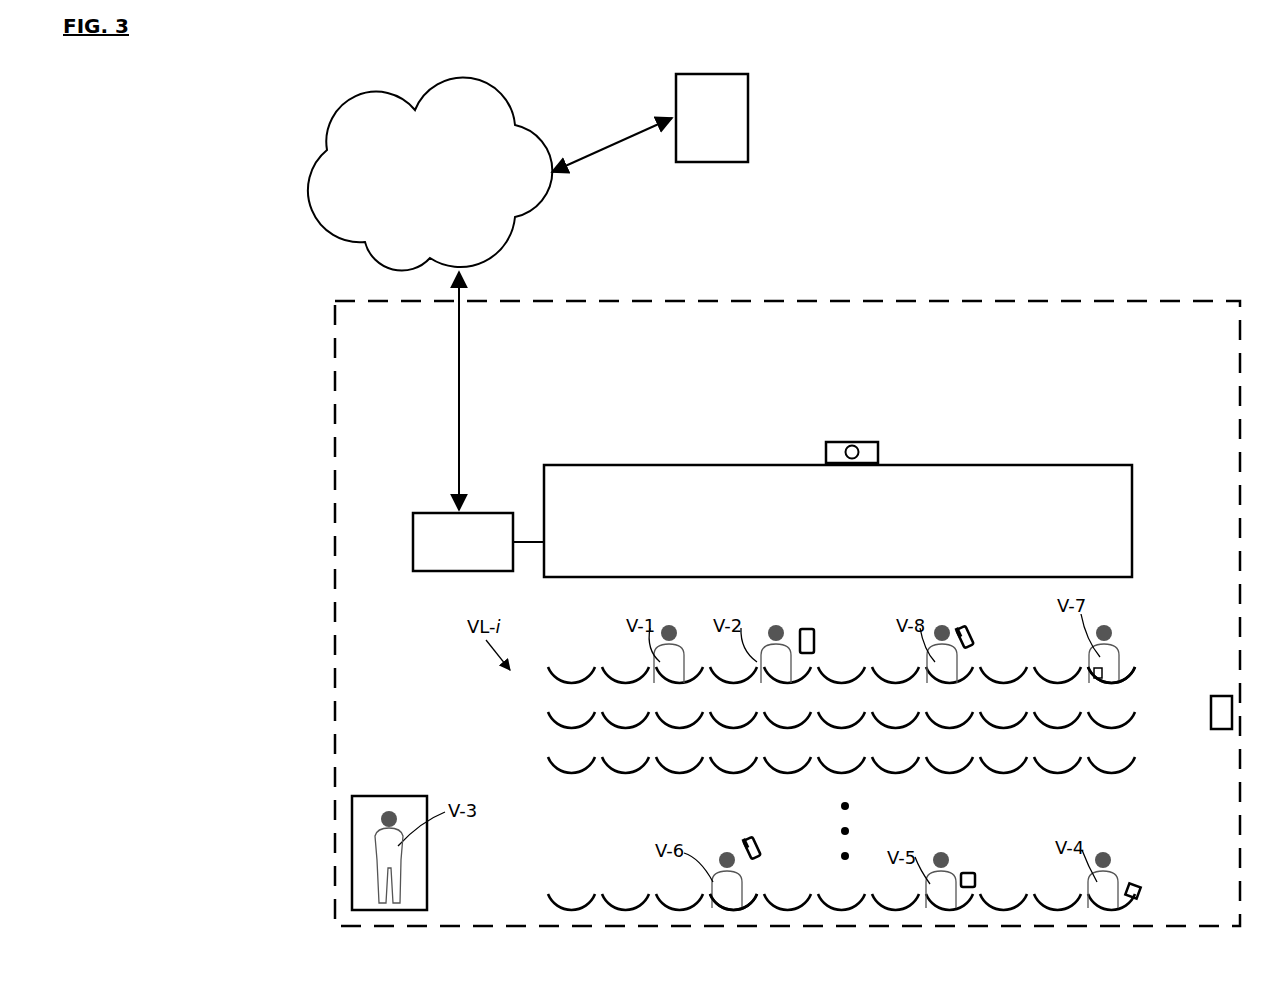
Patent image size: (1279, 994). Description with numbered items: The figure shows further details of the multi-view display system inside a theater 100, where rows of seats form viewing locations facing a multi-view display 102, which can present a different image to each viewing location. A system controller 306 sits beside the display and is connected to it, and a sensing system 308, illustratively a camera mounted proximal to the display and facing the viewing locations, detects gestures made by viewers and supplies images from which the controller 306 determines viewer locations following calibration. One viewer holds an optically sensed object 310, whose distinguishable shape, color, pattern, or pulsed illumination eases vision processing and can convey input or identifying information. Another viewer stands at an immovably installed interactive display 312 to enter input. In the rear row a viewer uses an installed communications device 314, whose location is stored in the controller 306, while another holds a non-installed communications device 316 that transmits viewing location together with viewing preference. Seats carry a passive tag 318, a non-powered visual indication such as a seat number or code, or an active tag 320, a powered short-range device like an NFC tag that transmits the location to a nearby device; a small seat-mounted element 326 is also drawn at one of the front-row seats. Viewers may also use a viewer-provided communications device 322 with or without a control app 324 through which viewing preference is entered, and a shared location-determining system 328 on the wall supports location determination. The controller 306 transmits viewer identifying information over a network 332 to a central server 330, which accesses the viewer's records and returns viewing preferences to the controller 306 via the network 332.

The theater 100 is at (787, 603).
The multi-view display 102 is at (838, 521).
The system controller 306 is at (433, 512).
The sensing system 308 is at (878, 446).
The optically sensed object 310 is at (813, 629).
The interactive display 312 is at (398, 796).
The installed communications device 314 is at (1138, 886).
The non-installed communications device 316 is at (968, 872).
The passive tag 318 is at (756, 891).
The active tag 320 is at (1137, 668).
The viewer-provided communications device 322 is at (973, 641).
The control app 324 is at (970, 627).
The seat sensor 326 is at (1101, 668).
The shared location-determining system 328 is at (1222, 730).
The central server 330 is at (749, 115).
The network 332 is at (430, 174).